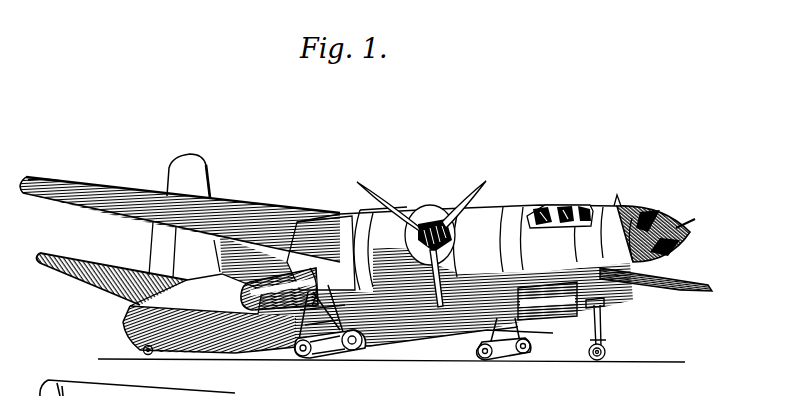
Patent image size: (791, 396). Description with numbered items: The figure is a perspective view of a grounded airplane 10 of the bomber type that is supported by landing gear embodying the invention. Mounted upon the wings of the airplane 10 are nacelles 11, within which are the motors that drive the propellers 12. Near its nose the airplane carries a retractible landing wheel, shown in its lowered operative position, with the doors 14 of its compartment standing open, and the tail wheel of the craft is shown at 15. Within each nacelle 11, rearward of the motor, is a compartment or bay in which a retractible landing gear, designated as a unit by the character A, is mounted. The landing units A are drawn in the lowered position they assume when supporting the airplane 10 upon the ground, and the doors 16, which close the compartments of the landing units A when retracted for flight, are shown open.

The airplane 10 is at (523, 200).
The nacelles 11 is at (349, 221).
The propellers 12 is at (474, 190).
The doors 14 is at (597, 309).
The tail wheel 15 is at (143, 350).
The doors 16 is at (243, 292).
The landing unit A is at (357, 352).